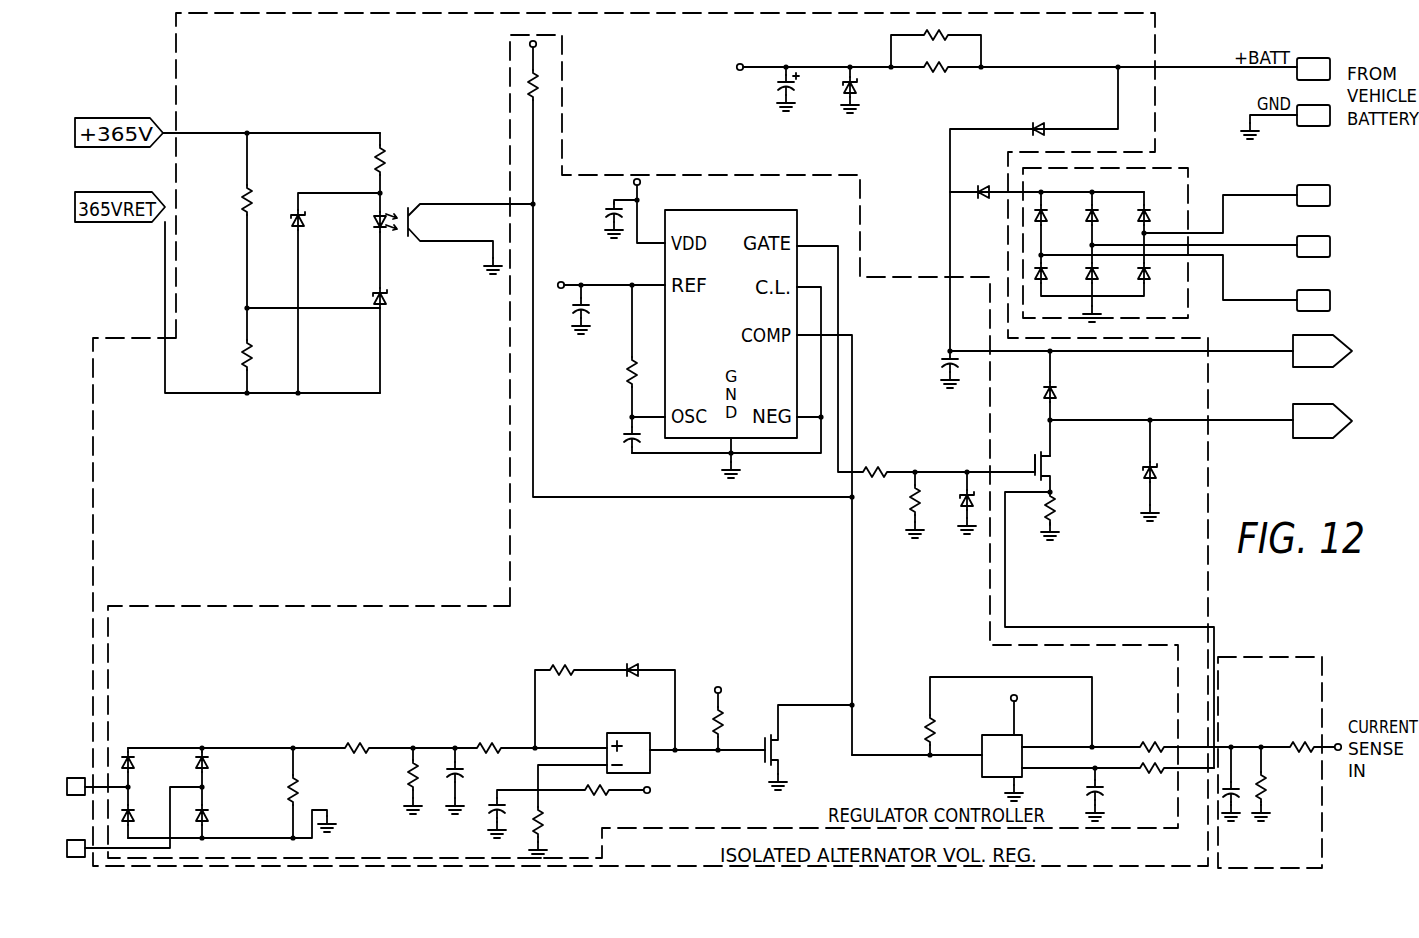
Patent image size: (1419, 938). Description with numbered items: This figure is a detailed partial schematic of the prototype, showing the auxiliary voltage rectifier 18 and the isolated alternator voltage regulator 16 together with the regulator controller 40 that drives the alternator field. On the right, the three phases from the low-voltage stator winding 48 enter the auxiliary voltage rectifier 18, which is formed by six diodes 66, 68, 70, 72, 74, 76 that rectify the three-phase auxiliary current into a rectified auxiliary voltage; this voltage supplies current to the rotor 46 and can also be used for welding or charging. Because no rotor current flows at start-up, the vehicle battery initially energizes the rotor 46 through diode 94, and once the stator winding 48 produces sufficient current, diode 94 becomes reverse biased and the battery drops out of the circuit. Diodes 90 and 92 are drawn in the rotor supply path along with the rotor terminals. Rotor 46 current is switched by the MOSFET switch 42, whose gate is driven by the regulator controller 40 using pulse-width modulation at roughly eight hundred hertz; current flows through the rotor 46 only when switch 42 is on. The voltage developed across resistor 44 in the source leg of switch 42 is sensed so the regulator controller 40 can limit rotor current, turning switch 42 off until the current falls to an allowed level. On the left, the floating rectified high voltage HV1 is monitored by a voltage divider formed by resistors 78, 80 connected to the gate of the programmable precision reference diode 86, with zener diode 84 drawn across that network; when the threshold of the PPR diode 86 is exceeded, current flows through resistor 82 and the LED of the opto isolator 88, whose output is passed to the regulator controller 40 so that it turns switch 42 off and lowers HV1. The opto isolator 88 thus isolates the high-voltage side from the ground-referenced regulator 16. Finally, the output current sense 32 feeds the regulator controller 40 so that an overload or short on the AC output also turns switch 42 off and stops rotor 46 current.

The isolated alternator voltage regulator 16 is at (1158, 52).
The auxiliary voltage rectifier 18 is at (1170, 165).
The AC output current sense 32 is at (1288, 652).
The regulator controller 40 is at (568, 152).
The switch 42 is at (1048, 456).
The resistor 44 is at (1064, 503).
The rotor 46 is at (1350, 386).
The stator winding 48 is at (1225, 242).
The diode 66 is at (1047, 218).
The diode 68 is at (1097, 216).
The diode 70 is at (1149, 216).
The diode 72 is at (1046, 272).
The diode 74 is at (1097, 275).
The diode 76 is at (1150, 273).
The resistor 78 is at (240, 206).
The resistor 80 is at (244, 360).
The resistor 82 is at (385, 158).
The zener diode 84 is at (295, 221).
The Programmable Precision Reference diode 86 is at (396, 298).
The opto isolator 88 is at (376, 222).
The flyback diode 90 is at (1060, 394).
The blocking diode 92 is at (994, 178).
The diode 94 is at (1064, 116).